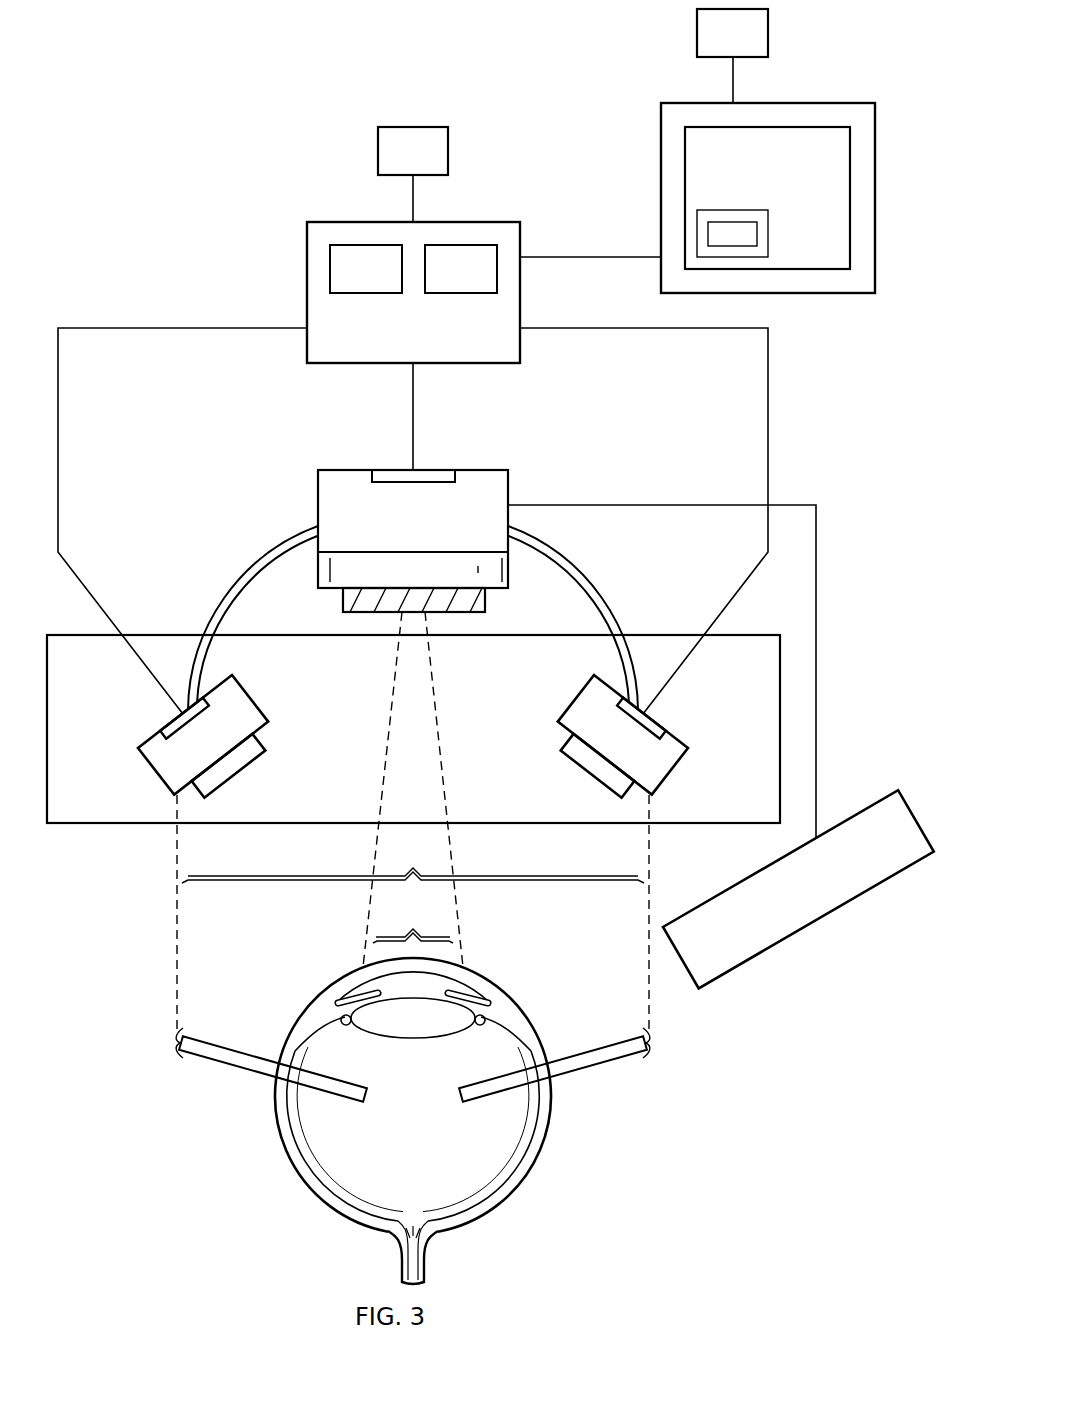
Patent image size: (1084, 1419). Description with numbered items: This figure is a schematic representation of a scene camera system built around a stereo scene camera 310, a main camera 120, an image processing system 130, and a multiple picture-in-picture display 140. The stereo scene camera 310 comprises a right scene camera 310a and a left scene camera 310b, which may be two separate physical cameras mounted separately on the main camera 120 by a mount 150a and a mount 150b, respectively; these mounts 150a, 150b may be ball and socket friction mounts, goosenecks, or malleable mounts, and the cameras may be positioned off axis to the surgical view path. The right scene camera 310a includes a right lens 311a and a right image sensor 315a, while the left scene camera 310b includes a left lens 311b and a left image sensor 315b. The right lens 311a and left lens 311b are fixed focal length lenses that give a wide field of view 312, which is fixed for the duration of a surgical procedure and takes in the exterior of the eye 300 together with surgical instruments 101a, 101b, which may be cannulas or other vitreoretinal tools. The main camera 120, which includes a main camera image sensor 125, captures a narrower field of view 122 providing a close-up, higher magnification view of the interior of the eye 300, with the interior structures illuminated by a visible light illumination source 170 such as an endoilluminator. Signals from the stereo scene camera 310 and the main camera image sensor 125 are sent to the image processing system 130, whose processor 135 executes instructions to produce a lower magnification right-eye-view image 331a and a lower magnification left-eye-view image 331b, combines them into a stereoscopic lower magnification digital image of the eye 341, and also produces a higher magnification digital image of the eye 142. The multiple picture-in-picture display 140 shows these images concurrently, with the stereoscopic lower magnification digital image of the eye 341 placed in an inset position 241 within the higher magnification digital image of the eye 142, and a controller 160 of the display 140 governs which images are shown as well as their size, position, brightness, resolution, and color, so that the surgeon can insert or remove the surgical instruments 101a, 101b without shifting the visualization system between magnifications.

The controller 160 is at (697, 27).
The multiple picture-in-picture display 140 is at (830, 98).
The higher magnification digital image of the eye 142 is at (845, 155).
The inset position 241 is at (733, 210).
The stereoscopic lower magnification digital image of the eye 341 is at (748, 231).
The processor 135 is at (378, 150).
The image processing system 130 is at (303, 245).
The lower magnification right-eye-view image 331a is at (366, 293).
The lower magnification left-eye-view image 331b is at (460, 293).
The main camera 120 is at (318, 496).
The main camera image sensor 125 is at (394, 472).
The mount 150a is at (207, 600).
The mount 150b is at (619, 600).
The stereo scene camera 310 is at (124, 830).
The right scene camera 310a is at (155, 773).
The left scene camera 310b is at (671, 773).
The right lens 311a is at (262, 748).
The left lens 311b is at (564, 748).
The right image sensor 315a is at (170, 718).
The left image sensor 315b is at (656, 718).
The visible light illumination source 170 is at (818, 923).
The field of view 312 is at (413, 861).
The field of view 122 is at (413, 921).
The surgical instrument 101a is at (232, 1046).
The surgical instrument 101b is at (594, 1046).
The eye 300 is at (277, 1107).